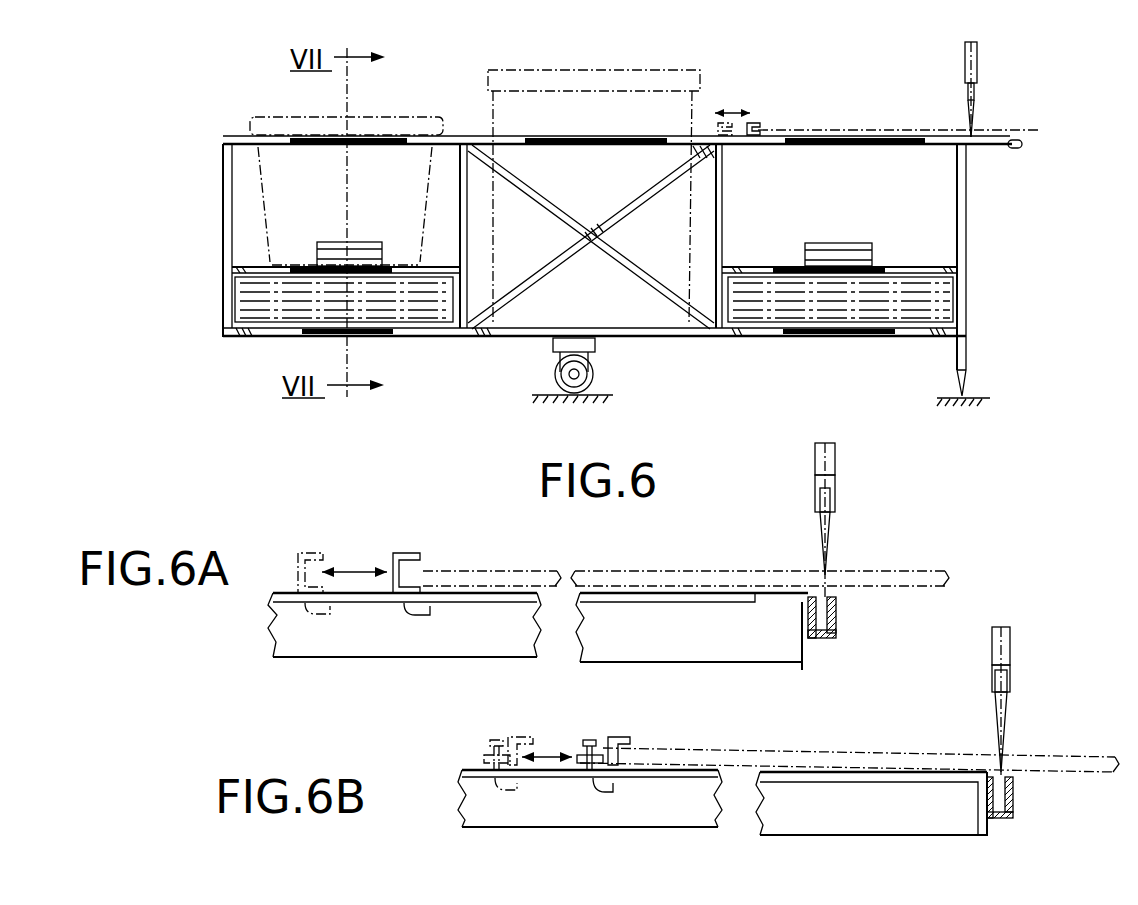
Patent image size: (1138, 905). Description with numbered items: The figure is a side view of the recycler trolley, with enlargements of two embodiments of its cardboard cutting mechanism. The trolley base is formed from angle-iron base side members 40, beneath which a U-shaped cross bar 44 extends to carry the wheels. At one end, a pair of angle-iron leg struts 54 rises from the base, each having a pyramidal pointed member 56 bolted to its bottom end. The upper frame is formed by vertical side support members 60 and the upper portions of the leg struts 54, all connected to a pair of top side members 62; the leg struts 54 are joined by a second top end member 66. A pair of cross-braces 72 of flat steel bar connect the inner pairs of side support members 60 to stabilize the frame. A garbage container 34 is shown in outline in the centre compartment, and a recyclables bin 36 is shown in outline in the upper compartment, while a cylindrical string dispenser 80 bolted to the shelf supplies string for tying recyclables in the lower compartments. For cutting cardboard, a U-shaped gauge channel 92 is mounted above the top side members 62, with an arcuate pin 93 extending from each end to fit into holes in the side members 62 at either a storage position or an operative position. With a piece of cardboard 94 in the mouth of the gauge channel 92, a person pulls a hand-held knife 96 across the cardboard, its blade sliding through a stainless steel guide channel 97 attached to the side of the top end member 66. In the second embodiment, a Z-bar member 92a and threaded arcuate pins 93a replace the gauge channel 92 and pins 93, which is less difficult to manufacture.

In FIG. 6, the garbage container 34 is at (606, 80).
In FIG. 6, the recyclables bin 36 is at (268, 125).
In FIG. 6, the base side member 40 is at (428, 337).
In FIG. 6, the U-shaped cross bar 44 is at (552, 343).
In FIG. 6, the leg strut 54 is at (965, 352).
In FIG. 6, the pointed member 56 is at (966, 383).
In FIG. 6, the side support member 60 is at (230, 270).
In FIG. 6, the top side member 62 is at (447, 140).
In FIG. 6A, the top side member 62 is at (380, 645).
In FIG. 6B, the top side member 62 is at (558, 812).
In FIG. 6A, the second top end member 66 is at (803, 628).
In FIG. 6B, the second top end member 66 is at (983, 800).
In FIG. 6, the cross-brace 72 is at (562, 272).
In FIG. 6, the string dispenser 80 is at (334, 250).
In FIG. 6, the U-shaped gauge channel 92 is at (760, 123).
In FIG. 6A, the U-shaped gauge channel 92 is at (407, 552).
In FIG. 6B, the Z-bar member 92a is at (628, 737).
In FIG. 6A, the arcuate pin 93 is at (317, 606).
In FIG. 6B, the threaded arcuate pin 93a is at (490, 780).
In FIG. 6, the cardboard 94 is at (828, 128).
In FIG. 6A, the cardboard 94 is at (730, 582).
In FIG. 6B, the cardboard 94 is at (876, 753).
In FIG. 6, the hand-held knife 96 is at (966, 82).
In FIG. 6A, the hand-held knife 96 is at (828, 527).
In FIG. 6B, the hand-held knife 96 is at (1003, 732).
In FIG. 6A, the guide channel 97 is at (838, 612).
In FIG. 6B, the guide channel 97 is at (1013, 793).